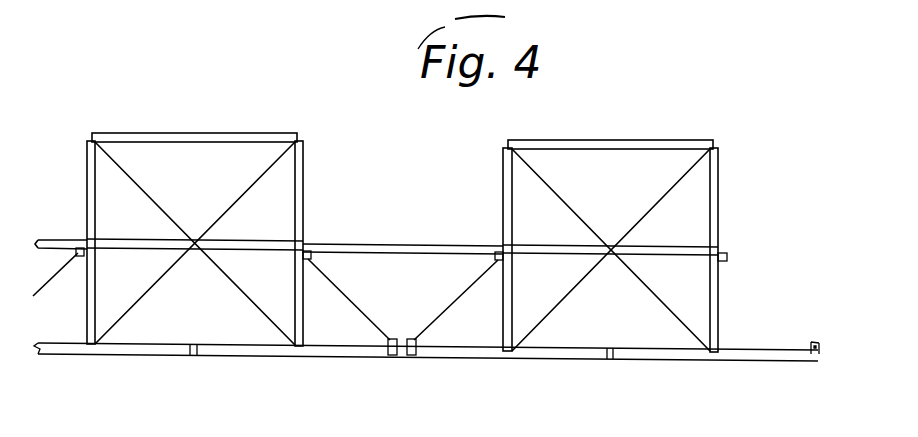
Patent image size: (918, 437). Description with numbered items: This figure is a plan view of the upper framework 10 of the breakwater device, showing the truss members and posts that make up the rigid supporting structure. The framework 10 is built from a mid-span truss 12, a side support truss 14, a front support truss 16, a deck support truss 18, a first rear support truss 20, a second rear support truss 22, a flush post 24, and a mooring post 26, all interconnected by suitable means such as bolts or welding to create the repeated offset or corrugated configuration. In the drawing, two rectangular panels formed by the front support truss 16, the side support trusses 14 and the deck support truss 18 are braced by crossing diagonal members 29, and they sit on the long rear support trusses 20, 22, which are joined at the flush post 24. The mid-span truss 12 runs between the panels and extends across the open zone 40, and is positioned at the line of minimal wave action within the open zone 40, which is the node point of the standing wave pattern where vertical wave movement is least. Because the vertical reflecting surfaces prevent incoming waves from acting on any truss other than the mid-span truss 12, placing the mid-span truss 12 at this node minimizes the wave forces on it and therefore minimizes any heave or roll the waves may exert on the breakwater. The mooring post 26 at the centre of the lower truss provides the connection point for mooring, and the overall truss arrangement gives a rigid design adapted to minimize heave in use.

The framework 10 is at (741, 191).
The mid-span truss 12 is at (397, 246).
The side support truss 14 is at (87, 192).
The front support truss 16 is at (191, 133).
The deck support truss 18 is at (240, 243).
The first rear support truss 20 is at (120, 352).
The second rear support truss 22 is at (270, 352).
The flush post 24 is at (612, 364).
The mooring post 26 is at (403, 358).
The diagonal brace 29 is at (246, 190).
The open zone 40 is at (411, 179).